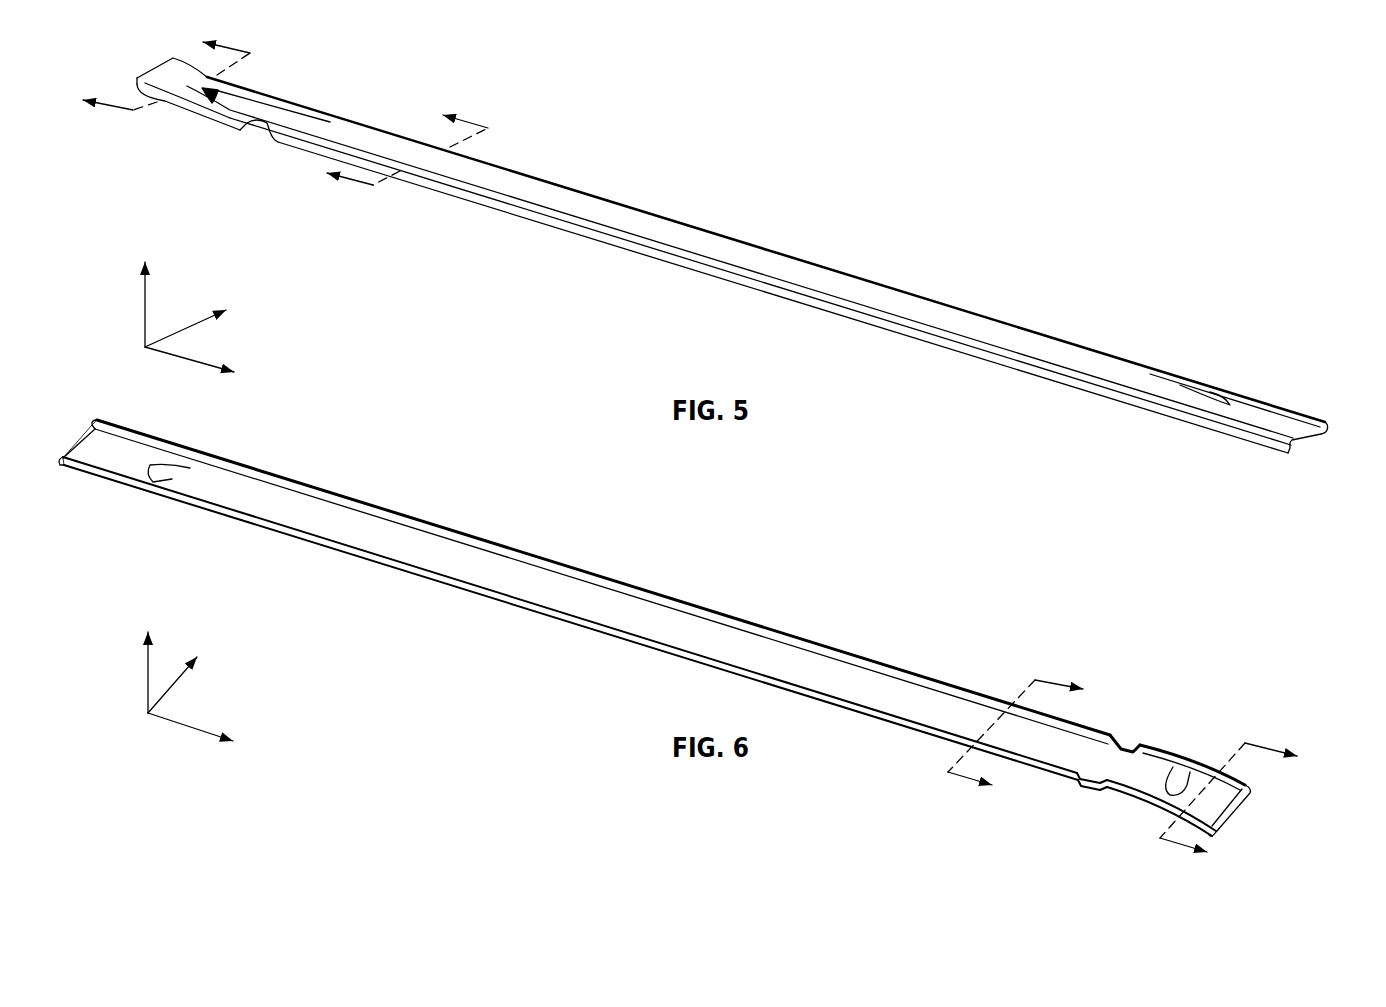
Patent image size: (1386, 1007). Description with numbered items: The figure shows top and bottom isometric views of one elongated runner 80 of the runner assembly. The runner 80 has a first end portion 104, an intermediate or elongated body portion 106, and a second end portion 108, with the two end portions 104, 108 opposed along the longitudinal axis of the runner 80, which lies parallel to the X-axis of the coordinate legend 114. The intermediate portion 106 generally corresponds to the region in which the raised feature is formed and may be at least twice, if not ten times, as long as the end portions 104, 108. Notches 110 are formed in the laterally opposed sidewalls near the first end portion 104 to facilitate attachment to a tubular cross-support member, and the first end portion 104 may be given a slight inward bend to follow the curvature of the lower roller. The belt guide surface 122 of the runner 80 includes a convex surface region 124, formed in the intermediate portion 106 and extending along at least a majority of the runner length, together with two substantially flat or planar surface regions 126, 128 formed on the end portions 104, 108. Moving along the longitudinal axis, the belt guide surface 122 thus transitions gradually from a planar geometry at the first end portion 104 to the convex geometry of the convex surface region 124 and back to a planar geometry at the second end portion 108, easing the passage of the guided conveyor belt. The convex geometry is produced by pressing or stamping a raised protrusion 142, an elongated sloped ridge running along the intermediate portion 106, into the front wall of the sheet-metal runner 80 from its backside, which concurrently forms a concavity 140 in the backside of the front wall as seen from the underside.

In FIG. 5, the elongated runner 80 is at (927, 187).
In FIG. 6, the elongated runner 80 is at (828, 603).
In FIG. 5, the first end portion 104 is at (150, 66).
In FIG. 6, the first end portion 104 is at (1250, 790).
In FIG. 5, the intermediate portion 106 is at (500, 212).
In FIG. 6, the intermediate portion 106 is at (718, 675).
In FIG. 5, the second end portion 108 is at (1305, 422).
In FIG. 6, the second end portion 108 is at (133, 490).
In FIG. 5, the notches 110 is at (262, 128).
In FIG. 6, the notches 110 is at (1116, 742).
In FIG. 5, the coordinate legend 114 is at (145, 302).
In FIG. 6, the coordinate legend 114 is at (148, 668).
In FIG. 5, the belt guide surface 122 is at (543, 190).
In FIG. 5, the convex surface region 124 is at (722, 240).
In FIG. 5, the first planar surface region 126 is at (188, 95).
In FIG. 5, the second planar surface region 128 is at (1253, 408).
In FIG. 6, the concavity 140 is at (515, 580).
In FIG. 5, the raised protrusion 142 is at (1048, 344).